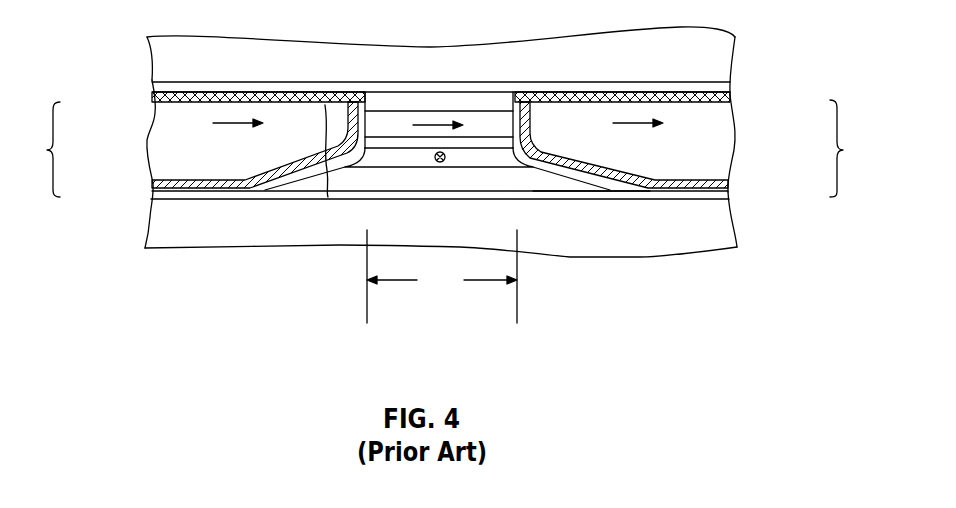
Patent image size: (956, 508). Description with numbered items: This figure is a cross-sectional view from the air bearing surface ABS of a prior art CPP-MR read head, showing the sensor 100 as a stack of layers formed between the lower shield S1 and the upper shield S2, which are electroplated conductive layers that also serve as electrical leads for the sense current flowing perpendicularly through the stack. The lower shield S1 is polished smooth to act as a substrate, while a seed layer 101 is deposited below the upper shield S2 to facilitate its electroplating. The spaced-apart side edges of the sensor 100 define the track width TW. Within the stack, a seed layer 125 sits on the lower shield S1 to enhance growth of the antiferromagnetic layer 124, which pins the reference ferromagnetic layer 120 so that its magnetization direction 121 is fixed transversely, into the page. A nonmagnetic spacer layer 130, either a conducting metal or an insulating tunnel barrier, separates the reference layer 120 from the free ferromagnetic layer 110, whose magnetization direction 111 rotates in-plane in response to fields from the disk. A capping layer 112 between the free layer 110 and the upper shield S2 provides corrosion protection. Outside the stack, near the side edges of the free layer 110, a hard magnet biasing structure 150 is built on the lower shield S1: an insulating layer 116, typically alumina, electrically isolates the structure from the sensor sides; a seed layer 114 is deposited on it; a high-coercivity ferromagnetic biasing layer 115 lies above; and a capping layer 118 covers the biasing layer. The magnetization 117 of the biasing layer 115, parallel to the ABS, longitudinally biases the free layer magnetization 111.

The upper magnetic shield layer S2 is at (670, 37).
The lower magnetic shield layer S1 is at (717, 223).
The seed layer 101 is at (155, 92).
The capping layer 118 is at (240, 97).
The ferromagnetic biasing layer 115 is at (157, 142).
The seed layer 114 is at (155, 183).
The insulating layer 116 is at (157, 195).
The hard magnet biasing structure 150 is at (442, 148).
The magnetization 117 is at (233, 127).
The sensor 100 is at (325, 155).
The capping layer 112 is at (502, 98).
The free ferromagnetic layer 110 is at (402, 125).
The magnetization direction 111 is at (440, 120).
The nonmagnetic spacer layer 130 is at (388, 142).
The reference ferromagnetic layer 120 is at (473, 158).
The magnetization direction 121 is at (440, 163).
The antiferromagnetic layer 124 is at (542, 180).
The seed layer 125 is at (593, 191).
The air bearing surface ABS is at (157, 222).
The track width TW is at (442, 276).